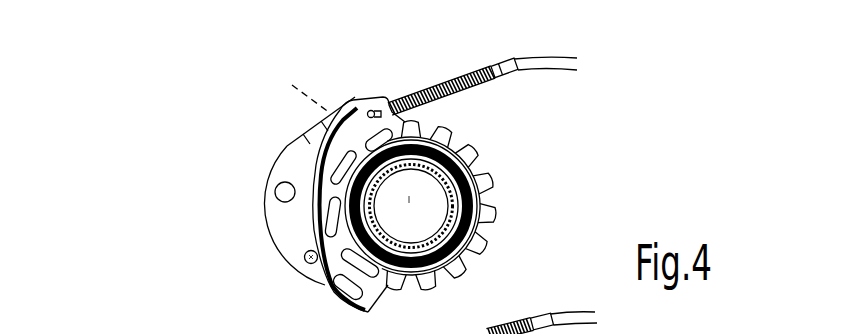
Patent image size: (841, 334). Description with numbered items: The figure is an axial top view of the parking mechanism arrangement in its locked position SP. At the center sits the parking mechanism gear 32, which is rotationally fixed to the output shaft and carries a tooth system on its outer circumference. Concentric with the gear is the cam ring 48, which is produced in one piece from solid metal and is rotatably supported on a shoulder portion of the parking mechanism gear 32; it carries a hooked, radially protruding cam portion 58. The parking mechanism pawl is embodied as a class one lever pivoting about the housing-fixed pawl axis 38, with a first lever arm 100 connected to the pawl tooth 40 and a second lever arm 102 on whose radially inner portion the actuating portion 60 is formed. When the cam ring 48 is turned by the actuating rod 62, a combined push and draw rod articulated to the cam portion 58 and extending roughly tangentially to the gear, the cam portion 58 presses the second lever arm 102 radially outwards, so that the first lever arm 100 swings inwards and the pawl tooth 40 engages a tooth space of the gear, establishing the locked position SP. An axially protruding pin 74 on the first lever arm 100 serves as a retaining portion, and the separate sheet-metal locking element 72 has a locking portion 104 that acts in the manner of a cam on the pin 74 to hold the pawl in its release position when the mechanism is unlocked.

The locked position SP is at (73, 223).
The parking mechanism gear 32 is at (490, 192).
The pawl axis 38 is at (283, 192).
The pawl tooth 40 is at (365, 240).
The cam ring 48 is at (475, 212).
The cam portion 58 is at (358, 98).
The actuating portion 60 is at (359, 215).
The actuating rod 62 is at (553, 62).
The locking element 72 is at (342, 303).
The pin 74 is at (305, 256).
The first lever arm 100 is at (275, 213).
The second lever arm 102 is at (292, 158).
The locking portion 104 is at (335, 257).